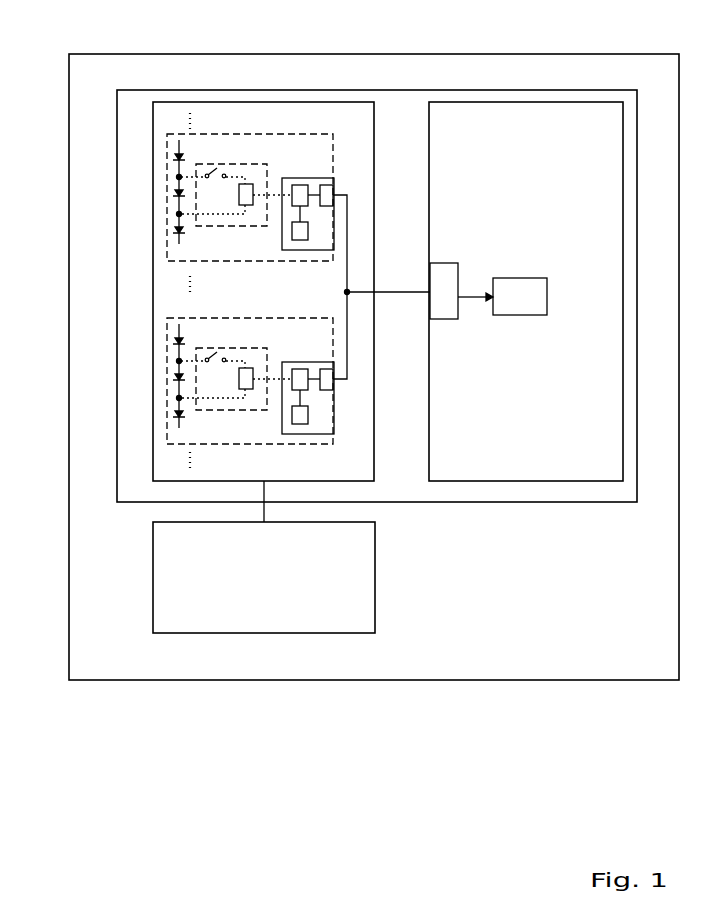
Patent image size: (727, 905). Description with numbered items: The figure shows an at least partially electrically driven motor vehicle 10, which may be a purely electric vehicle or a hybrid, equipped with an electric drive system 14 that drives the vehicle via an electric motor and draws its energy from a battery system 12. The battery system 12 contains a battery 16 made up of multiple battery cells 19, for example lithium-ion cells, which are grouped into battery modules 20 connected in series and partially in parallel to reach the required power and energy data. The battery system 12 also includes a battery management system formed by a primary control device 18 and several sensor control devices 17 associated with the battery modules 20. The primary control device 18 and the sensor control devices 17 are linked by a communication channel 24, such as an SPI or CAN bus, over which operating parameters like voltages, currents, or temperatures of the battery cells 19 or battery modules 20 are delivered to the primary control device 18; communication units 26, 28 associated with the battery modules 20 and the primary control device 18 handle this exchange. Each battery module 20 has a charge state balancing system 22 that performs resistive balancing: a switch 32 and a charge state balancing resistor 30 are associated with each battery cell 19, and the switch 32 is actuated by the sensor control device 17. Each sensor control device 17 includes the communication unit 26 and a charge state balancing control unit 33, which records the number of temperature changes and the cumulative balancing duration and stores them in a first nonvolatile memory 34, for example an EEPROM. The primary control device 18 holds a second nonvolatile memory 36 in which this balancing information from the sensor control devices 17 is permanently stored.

The motor vehicle 10 is at (445, 54).
The battery system 12 is at (377, 90).
The electric drive system 14 is at (264, 633).
The battery 16 is at (330, 102).
The sensor control device 17 is at (325, 252).
The primary control device 18 is at (566, 102).
The battery cell 19 is at (179, 160).
The battery module 20 is at (203, 134).
The charge state balancing system 22 is at (254, 164).
The communication channel 24 is at (405, 291).
The communication unit 26 is at (333, 188).
The communication unit 28 is at (445, 319).
The charge state balancing resistor 30 is at (253, 194).
The switch 32 is at (213, 170).
The charge state balancing control unit 33 is at (300, 185).
The first nonvolatile memory 34 is at (296, 250).
The second nonvolatile memory 36 is at (520, 315).